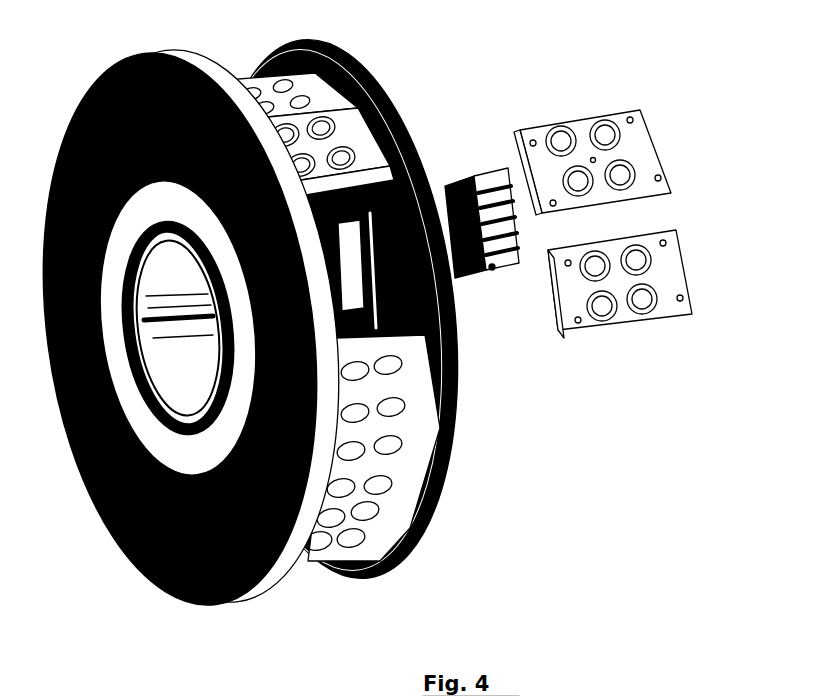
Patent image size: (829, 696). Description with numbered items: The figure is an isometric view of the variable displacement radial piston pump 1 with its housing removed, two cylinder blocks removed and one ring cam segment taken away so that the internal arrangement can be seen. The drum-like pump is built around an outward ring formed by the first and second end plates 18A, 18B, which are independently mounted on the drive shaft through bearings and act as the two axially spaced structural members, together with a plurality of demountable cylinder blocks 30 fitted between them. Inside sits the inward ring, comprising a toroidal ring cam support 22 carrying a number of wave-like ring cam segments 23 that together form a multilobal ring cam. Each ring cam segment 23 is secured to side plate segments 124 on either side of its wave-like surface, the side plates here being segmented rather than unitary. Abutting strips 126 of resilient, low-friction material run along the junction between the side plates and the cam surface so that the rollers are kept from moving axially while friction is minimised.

The variable displacement radial piston pump 1 is at (379, 317).
The first end plate 18A is at (92, 73).
The second end plate 18B is at (276, 46).
The ring cam support 22 is at (344, 265).
The ring cam segment 23 is at (484, 262).
The cylinder block 30 is at (662, 296).
The side plate segment 124 is at (437, 176).
The abutting strip 126 is at (497, 223).